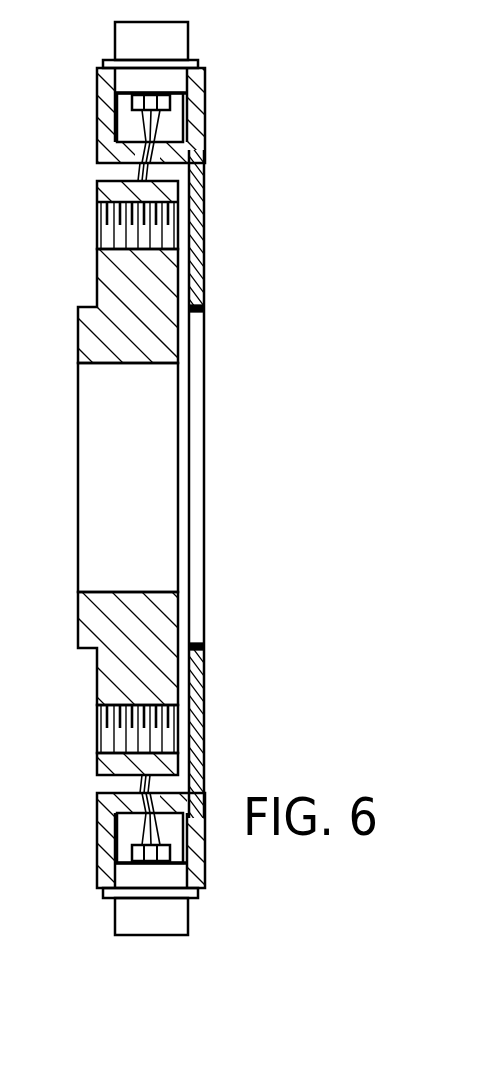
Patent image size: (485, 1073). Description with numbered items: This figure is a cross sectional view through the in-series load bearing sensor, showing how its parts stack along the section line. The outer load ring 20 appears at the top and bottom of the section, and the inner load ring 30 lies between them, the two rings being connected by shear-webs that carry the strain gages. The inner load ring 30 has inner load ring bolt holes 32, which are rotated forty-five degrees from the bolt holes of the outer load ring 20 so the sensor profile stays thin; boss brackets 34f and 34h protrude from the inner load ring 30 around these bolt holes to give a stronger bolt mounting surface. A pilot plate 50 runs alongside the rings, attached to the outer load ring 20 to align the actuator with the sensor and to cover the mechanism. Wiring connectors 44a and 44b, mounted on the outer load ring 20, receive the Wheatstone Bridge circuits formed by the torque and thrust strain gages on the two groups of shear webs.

The outer load ring 20 is at (98, 125).
The inner load ring 30 is at (97, 262).
The inner load ring bolt hole 32 is at (97, 737).
The boss bracket 34f is at (97, 195).
The boss bracket 34h is at (97, 757).
The wiring connector 44a is at (115, 43).
The wiring connector 44b is at (133, 935).
The pilot plate 50 is at (207, 252).